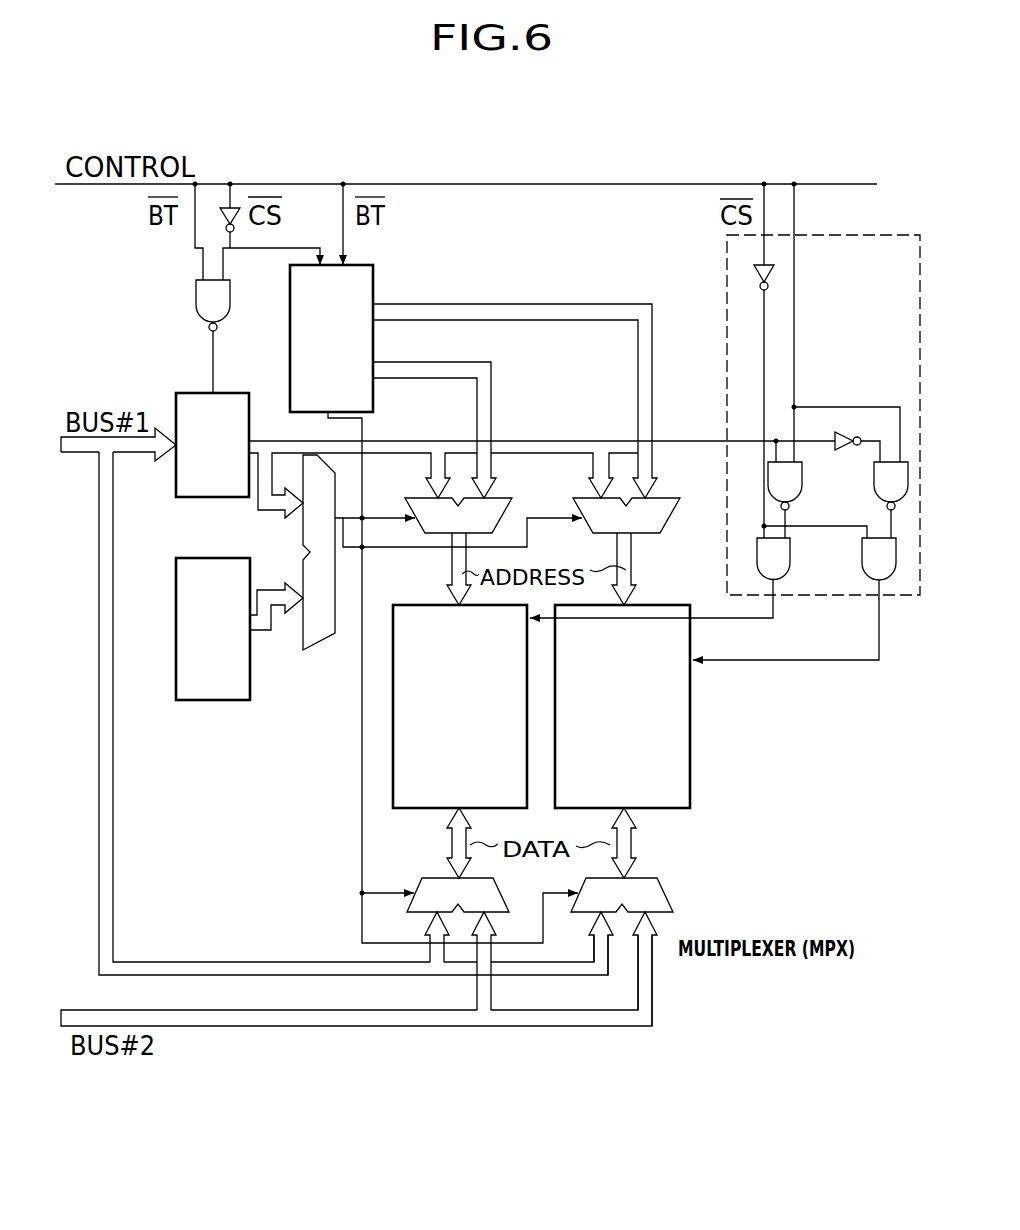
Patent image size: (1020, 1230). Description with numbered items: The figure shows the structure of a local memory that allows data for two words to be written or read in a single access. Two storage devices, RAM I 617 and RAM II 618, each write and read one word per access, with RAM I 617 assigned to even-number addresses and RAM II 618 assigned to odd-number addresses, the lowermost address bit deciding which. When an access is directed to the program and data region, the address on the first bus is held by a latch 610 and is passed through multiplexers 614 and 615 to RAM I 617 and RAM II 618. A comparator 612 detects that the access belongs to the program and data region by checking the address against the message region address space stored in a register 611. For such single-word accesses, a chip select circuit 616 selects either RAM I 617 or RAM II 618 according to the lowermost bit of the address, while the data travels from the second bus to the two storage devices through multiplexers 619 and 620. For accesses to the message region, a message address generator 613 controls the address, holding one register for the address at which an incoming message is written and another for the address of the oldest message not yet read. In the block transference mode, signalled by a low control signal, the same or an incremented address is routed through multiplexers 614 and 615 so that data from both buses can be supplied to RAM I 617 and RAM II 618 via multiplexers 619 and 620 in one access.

The latch 610 is at (198, 393).
The register 611 is at (210, 558).
The comparator 612 is at (320, 650).
The message address generator 613 is at (290, 365).
The multiplexer 614 is at (506, 509).
The multiplexer 615 is at (666, 509).
The chip select circuit 616 is at (832, 235).
The RAM I 617 is at (421, 605).
The RAM II 618 is at (676, 605).
The multiplexer 619 is at (421, 878).
The multiplexer 620 is at (658, 880).